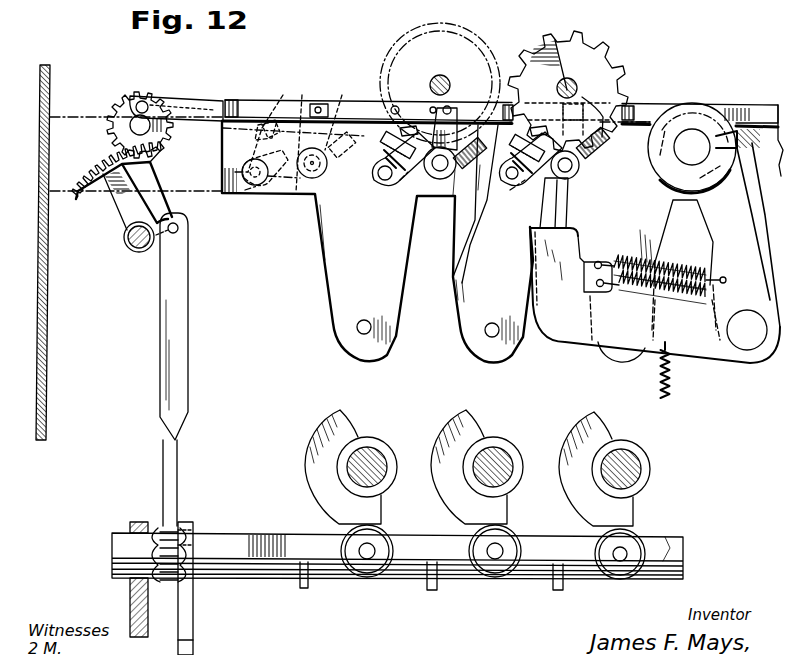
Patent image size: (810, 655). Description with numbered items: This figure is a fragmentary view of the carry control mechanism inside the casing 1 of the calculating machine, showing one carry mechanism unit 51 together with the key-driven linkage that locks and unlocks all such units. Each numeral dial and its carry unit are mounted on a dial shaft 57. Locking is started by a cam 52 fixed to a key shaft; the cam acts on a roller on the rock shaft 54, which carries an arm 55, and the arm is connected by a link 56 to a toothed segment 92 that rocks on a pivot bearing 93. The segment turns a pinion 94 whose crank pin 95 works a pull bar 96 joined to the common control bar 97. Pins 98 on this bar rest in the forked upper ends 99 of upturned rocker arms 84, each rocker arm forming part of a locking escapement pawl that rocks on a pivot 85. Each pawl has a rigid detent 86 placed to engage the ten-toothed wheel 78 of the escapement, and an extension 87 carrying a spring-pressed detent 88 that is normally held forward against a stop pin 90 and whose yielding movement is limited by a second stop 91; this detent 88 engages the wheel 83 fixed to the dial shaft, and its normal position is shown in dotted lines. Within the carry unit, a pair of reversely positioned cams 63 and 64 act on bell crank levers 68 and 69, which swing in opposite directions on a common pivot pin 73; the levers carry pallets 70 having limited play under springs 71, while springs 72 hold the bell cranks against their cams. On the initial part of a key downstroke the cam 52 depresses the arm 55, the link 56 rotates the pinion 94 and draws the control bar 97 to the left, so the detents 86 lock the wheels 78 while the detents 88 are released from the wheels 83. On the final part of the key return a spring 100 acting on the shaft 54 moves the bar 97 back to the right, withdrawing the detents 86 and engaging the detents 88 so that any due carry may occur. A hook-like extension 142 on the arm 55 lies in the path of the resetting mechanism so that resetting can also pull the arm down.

The casing 1 is at (48, 347).
The carry mechanism unit 51 is at (441, 75).
The cam 52 is at (467, 425).
The rock shaft 54 is at (258, 540).
The arm 55 is at (192, 528).
The link 56 is at (188, 352).
The dial shaft 57 is at (571, 81).
The cam 63 is at (700, 107).
The cam 64 is at (672, 193).
The bell crank lever 68 is at (752, 180).
The bell crank lever 69 is at (700, 352).
The pallets 70 is at (550, 190).
The springs 71 is at (678, 270).
The springs 72 is at (672, 392).
The pivot pin 73 is at (748, 342).
The toothed wheel 78 is at (608, 62).
The wheel 83 is at (548, 42).
The rocker arm 84 is at (333, 113).
The pivot 85 is at (314, 172).
The rigid detent 86 is at (346, 156).
The extension 87 is at (280, 193).
The spring-pressed detent 88 is at (266, 126).
The stop pin 90 is at (290, 160).
The stop 91 is at (258, 125).
The toothed segment 92 is at (83, 196).
The pivot bearing 93 is at (135, 248).
The pinion 94 is at (112, 102).
The crank pin 95 is at (138, 104).
The pull bar 96 is at (205, 110).
The common control bar 97 is at (240, 105).
The pins 98 is at (318, 105).
The forked upper ends 99 is at (316, 100).
The spring 100 is at (172, 582).
The hook-like extension 142 is at (192, 637).